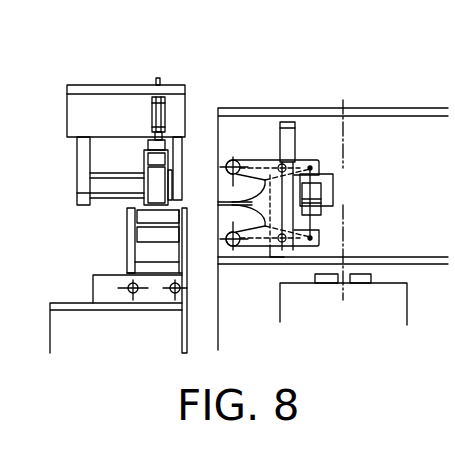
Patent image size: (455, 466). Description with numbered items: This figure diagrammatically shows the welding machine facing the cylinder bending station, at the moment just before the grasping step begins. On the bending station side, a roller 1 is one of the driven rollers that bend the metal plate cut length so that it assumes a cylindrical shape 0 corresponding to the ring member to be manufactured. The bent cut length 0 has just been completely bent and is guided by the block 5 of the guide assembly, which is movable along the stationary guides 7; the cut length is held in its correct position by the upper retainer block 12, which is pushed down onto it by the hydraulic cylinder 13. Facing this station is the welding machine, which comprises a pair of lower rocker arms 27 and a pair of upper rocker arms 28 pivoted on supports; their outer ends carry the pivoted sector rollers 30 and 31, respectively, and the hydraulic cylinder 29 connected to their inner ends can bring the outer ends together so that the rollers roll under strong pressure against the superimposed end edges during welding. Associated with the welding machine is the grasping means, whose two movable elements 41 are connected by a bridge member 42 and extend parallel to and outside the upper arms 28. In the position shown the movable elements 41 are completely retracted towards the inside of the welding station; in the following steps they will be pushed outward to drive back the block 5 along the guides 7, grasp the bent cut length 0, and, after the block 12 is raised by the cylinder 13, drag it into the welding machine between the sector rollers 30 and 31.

The roller 1 is at (136, 217).
The block 5 is at (158, 182).
The stationary guides 7 is at (98, 197).
The bent cut length 0 is at (146, 155).
The upper retainer block 12 is at (153, 144).
The hydraulic cylinder 13 is at (163, 113).
The lower rocker arms 27 is at (260, 250).
The upper rocker arms 28 is at (303, 165).
The hydraulic cylinder 29 is at (317, 212).
The sector roller 30 is at (228, 216).
The sector roller 31 is at (226, 185).
The movable elements 41 is at (327, 192).
The bridge member 42 is at (290, 131).